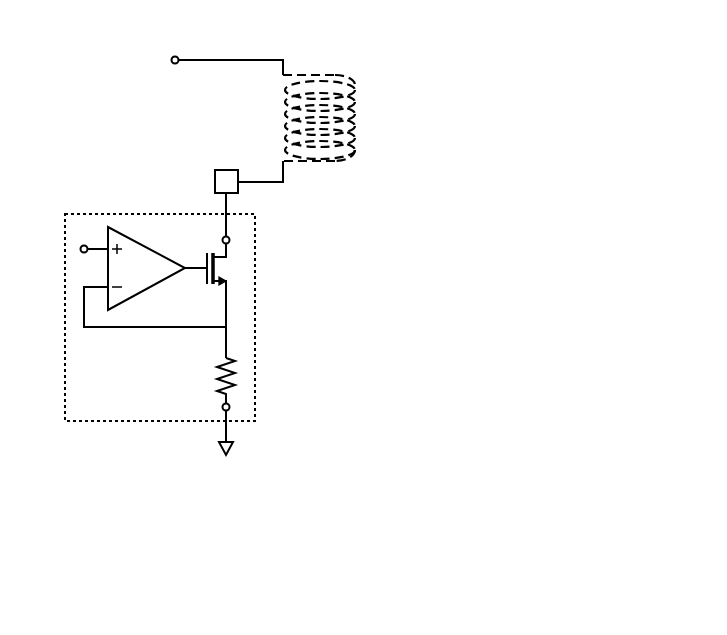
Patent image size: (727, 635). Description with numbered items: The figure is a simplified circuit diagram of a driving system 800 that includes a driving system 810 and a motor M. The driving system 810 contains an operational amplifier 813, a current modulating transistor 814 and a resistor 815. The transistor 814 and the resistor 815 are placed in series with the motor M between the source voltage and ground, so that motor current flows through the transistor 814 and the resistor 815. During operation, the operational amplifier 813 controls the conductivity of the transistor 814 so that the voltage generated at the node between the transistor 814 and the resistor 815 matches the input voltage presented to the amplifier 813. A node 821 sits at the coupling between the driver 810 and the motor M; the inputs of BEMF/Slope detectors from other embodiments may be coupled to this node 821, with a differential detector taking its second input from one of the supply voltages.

The driving system 800 is at (343, 569).
The driving system 810 is at (119, 424).
The operational amplifier 813 is at (107, 226).
The current modulating transistor 814 is at (207, 256).
The resistor 815 is at (211, 377).
The node 821 is at (214, 188).